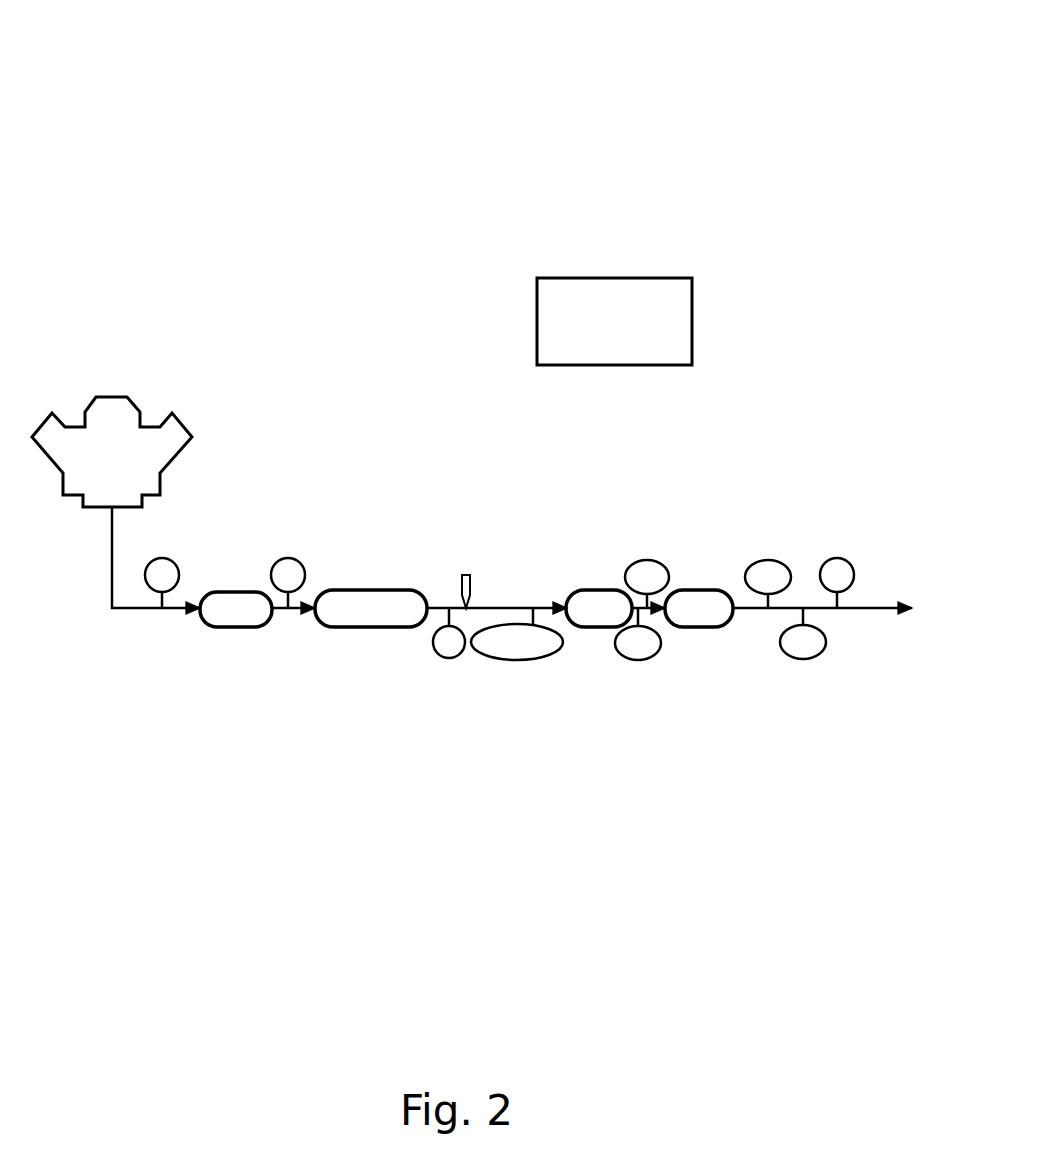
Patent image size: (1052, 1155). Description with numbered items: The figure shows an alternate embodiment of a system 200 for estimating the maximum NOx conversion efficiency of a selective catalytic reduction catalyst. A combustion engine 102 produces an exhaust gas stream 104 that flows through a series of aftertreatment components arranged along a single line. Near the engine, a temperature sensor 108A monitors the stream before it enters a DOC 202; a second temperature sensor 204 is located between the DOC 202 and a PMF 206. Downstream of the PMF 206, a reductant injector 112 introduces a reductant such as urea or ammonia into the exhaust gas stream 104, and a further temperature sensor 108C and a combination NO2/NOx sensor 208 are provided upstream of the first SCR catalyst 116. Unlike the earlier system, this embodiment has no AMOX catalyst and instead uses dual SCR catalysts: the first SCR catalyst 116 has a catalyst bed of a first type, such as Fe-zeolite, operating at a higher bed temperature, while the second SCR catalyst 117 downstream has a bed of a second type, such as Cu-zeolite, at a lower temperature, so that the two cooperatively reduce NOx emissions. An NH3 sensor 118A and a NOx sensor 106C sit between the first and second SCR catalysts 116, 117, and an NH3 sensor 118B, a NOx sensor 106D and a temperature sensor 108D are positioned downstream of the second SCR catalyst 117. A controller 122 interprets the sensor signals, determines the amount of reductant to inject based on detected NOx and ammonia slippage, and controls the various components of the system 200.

The system 200 is at (118, 61).
The combustion engine 102 is at (112, 452).
The exhaust gas stream 104 is at (110, 555).
The temperature sensor 108A is at (172, 562).
The DOC 202 is at (224, 591).
The temperature sensor 204 is at (298, 560).
The PMF 206 is at (400, 590).
The reductant injector 112 is at (472, 575).
The temperature sensor 108C is at (433, 648).
The combination NO2/NOx sensor 208 is at (500, 660).
The first SCR catalyst 116 is at (582, 590).
The NH3 sensor 118A is at (652, 560).
The second SCR catalyst 117 is at (698, 590).
The NOx sensor 106C is at (633, 662).
The NH3 sensor 118B is at (787, 563).
The NOx sensor 106D is at (780, 655).
The temperature sensor 108D is at (845, 558).
The controller 122 is at (614, 321).